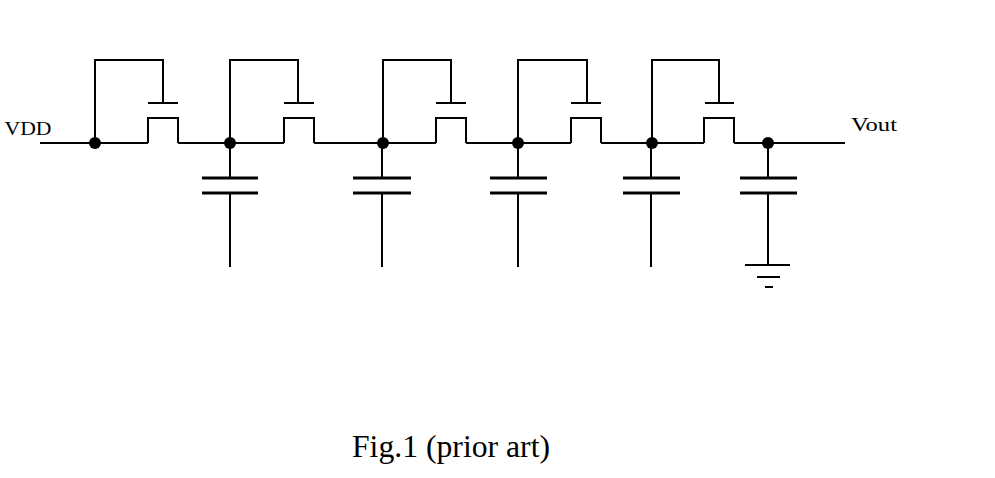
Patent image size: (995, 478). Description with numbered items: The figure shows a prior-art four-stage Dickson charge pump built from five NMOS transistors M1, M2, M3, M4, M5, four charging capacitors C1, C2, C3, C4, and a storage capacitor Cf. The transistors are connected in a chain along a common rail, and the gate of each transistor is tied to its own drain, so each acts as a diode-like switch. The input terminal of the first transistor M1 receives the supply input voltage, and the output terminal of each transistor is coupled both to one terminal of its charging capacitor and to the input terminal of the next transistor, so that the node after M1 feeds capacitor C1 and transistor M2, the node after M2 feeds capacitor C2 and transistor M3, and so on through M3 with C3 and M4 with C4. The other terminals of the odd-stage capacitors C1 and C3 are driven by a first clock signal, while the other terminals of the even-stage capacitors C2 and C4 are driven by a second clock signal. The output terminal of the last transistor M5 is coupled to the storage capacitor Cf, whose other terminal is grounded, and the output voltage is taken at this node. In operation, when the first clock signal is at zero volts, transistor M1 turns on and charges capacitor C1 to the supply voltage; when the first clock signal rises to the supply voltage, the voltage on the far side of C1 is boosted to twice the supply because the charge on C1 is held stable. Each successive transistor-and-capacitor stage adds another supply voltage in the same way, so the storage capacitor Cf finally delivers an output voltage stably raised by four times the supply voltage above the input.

The first NMOS transistor M1 is at (136, 82).
The NMOS transistor M2 is at (272, 82).
The NMOS transistor M3 is at (424, 80).
The NMOS transistor M4 is at (559, 81).
The last NMOS transistor M5 is at (693, 81).
The charging capacitor C1 is at (210, 220).
The charging capacitor C2 is at (367, 220).
The charging capacitor C3 is at (504, 220).
The charging capacitor C4 is at (639, 220).
The storage capacitor Cf is at (756, 215).